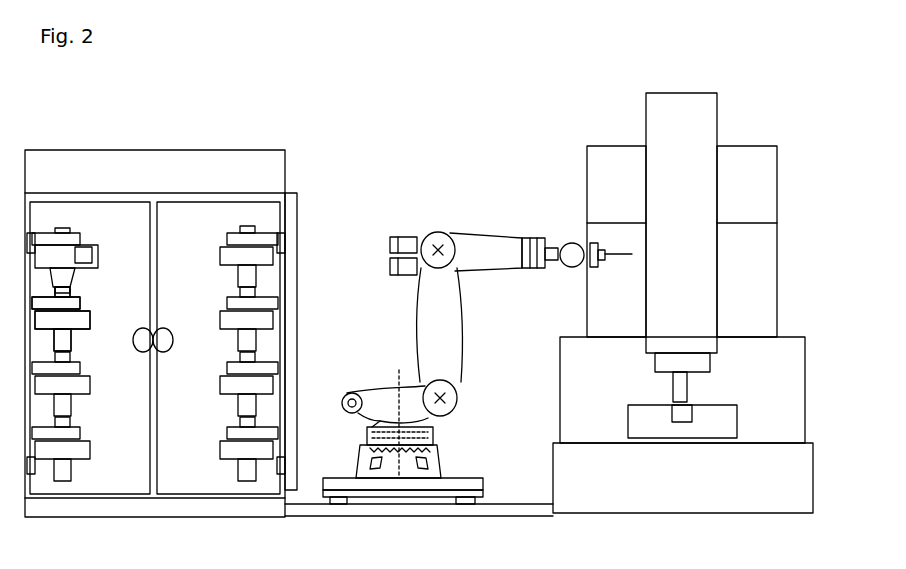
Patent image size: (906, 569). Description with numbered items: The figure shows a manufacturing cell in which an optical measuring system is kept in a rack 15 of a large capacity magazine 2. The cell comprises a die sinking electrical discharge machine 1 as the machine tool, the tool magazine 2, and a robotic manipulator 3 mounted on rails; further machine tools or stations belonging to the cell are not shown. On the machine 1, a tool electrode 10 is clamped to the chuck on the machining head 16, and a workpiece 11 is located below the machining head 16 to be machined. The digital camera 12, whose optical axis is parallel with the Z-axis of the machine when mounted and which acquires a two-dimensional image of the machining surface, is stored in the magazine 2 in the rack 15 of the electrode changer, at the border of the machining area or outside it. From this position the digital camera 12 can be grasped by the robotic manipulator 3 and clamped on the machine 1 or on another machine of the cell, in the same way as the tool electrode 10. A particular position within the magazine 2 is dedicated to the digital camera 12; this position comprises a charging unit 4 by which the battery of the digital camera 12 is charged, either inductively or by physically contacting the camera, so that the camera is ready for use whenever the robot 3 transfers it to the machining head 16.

The die sinking electrical discharge machine 1 is at (546, 153).
The large capacity magazine 2 is at (326, 151).
The robotic manipulator 3 is at (438, 188).
The charging unit 4 is at (97, 247).
The tool electrode 10 is at (68, 333).
The workpiece 11 is at (732, 425).
The digital camera 12 is at (82, 257).
The rack 15 is at (72, 232).
The machining head 16 is at (708, 133).